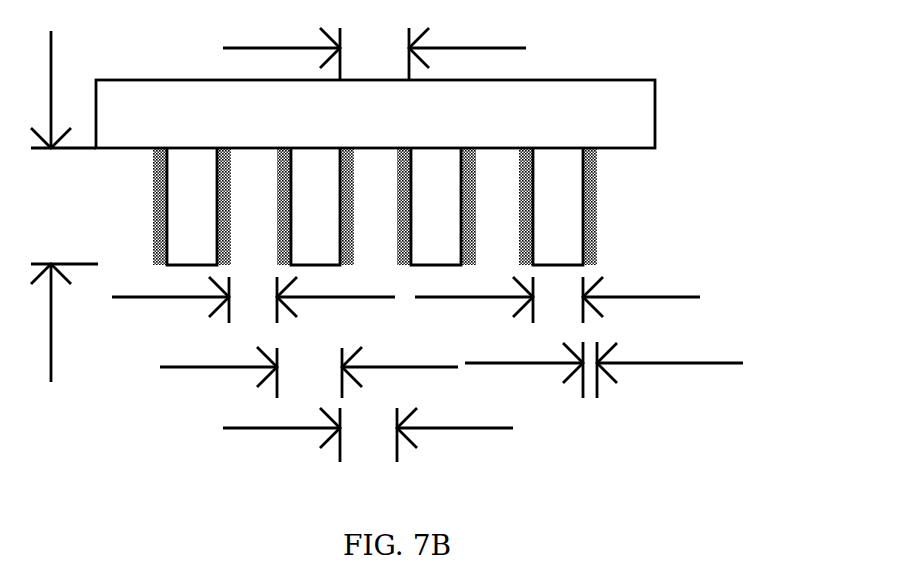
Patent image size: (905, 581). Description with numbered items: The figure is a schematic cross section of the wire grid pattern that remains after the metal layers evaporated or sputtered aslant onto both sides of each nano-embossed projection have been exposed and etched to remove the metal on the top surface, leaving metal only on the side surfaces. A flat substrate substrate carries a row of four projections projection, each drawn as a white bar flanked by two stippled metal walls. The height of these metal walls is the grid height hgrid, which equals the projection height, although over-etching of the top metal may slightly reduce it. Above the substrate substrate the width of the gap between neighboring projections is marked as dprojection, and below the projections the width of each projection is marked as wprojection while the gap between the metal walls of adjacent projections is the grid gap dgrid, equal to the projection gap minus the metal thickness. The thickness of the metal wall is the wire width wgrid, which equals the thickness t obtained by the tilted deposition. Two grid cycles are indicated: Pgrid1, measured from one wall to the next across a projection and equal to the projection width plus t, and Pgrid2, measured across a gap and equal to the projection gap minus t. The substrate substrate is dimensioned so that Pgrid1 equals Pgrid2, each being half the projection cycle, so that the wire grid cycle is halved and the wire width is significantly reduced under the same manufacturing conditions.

The element substrate is at (655, 127).
The element projection is at (375, 206).
The height of the grid hgrid is at (70, 206).
The width of the gap between the projections dprojection is at (374, 54).
The width of the gap of the wire grid dgrid is at (253, 300).
The width of the projection wprojection is at (557, 309).
The wire width of the wire grid wgrid is at (604, 381).
The first wire grid cycle Pgrid1 is at (309, 372).
The second wire grid cycle Pgrid2 is at (368, 435).